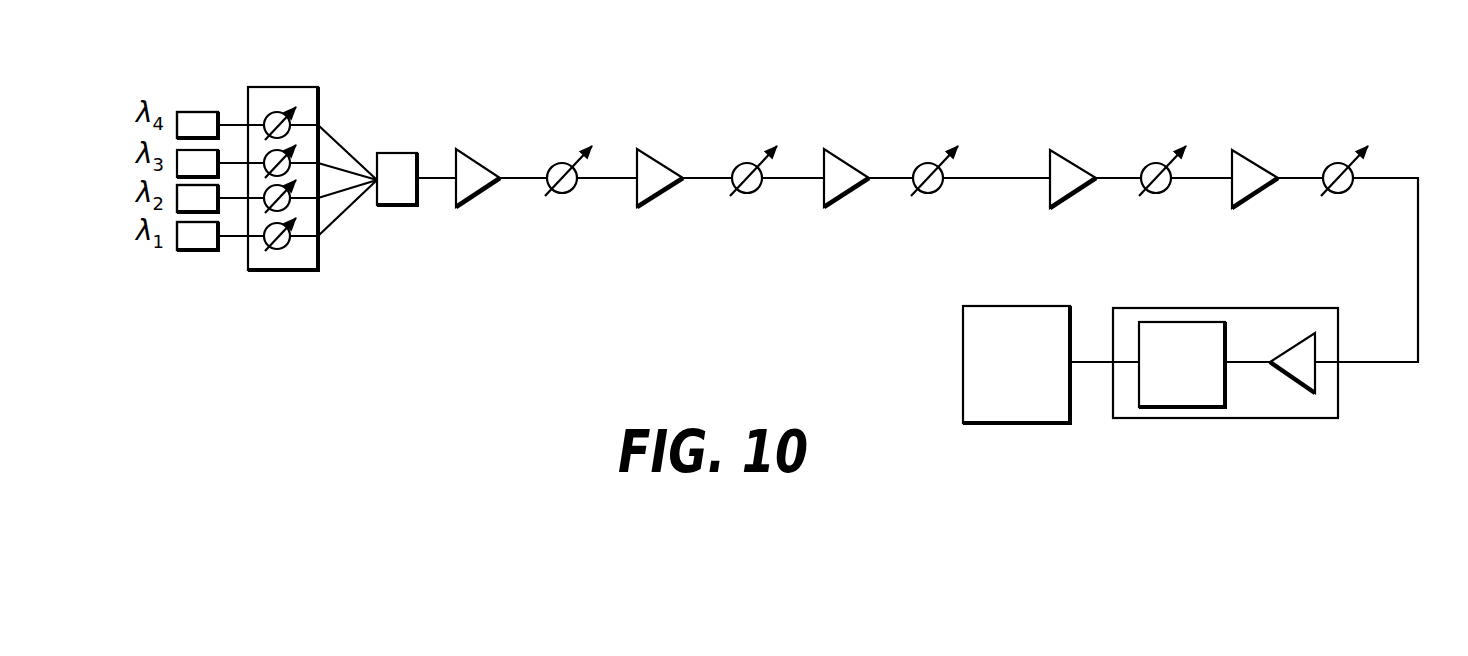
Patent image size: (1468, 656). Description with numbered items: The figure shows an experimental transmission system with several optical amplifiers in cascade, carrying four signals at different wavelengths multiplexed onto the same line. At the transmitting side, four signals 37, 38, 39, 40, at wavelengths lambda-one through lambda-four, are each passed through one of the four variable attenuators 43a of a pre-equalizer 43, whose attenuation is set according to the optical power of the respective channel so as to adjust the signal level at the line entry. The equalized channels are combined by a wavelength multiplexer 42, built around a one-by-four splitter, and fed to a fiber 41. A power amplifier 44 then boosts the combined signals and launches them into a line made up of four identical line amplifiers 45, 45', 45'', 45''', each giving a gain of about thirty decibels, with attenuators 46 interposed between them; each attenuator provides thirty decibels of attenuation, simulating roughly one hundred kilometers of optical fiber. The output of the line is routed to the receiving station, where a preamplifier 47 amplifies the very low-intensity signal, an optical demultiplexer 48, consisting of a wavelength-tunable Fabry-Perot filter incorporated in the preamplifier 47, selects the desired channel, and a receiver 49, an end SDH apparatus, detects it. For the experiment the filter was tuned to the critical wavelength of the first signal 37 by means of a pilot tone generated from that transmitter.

The signal 37 is at (205, 237).
The signal 38 is at (192, 200).
The signal 39 is at (182, 160).
The signal 40 is at (203, 108).
The fiber 41 is at (436, 178).
The wavelength multiplexer 42 is at (395, 207).
The pre-equalizer 43 is at (302, 87).
The variable attenuator 43a is at (280, 247).
The power amplifier 44 is at (483, 197).
The line amplifier 45 is at (643, 214).
The line amplifier 45' is at (826, 207).
The line amplifier 45'' is at (1049, 204).
The line amplifier 45''' is at (1230, 203).
The attenuator 46 is at (548, 165).
The preamplifier 47 is at (1293, 370).
The optical demultiplexer 48 is at (1173, 403).
The receiver 49 is at (962, 358).